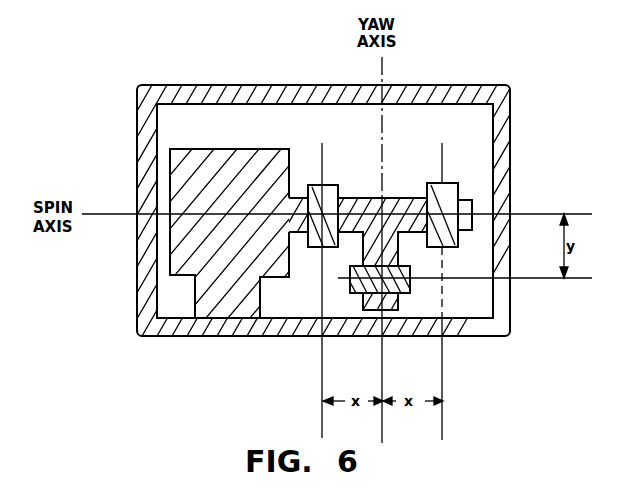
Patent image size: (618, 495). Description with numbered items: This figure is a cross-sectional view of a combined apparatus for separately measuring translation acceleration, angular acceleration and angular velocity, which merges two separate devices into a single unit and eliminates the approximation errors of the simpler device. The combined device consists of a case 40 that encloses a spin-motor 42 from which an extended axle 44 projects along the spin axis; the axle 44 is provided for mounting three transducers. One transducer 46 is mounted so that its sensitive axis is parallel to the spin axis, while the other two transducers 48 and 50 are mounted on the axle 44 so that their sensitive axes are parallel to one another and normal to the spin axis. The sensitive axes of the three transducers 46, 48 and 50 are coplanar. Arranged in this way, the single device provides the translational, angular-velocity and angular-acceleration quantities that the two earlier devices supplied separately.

The case 40 is at (510, 130).
The spin-motor 42 is at (233, 150).
The extended axle 44 is at (393, 198).
The transducer 46 is at (402, 284).
The transducer 48 is at (330, 185).
The transducer 50 is at (450, 184).